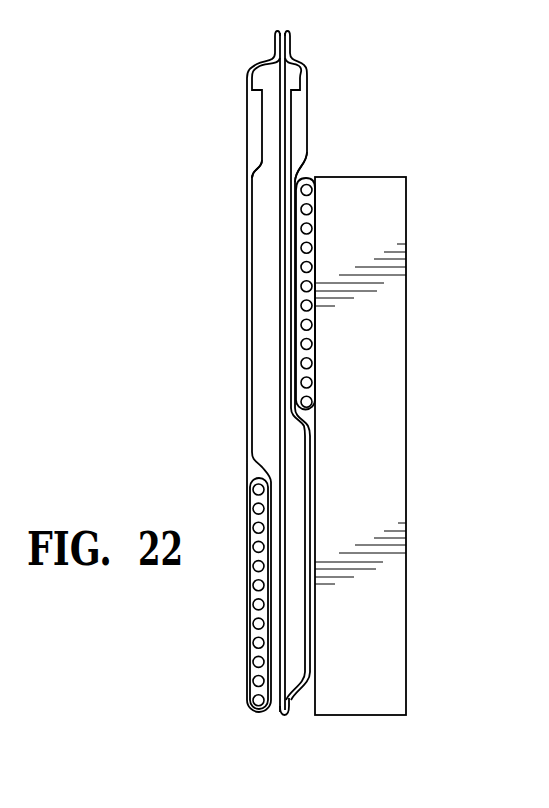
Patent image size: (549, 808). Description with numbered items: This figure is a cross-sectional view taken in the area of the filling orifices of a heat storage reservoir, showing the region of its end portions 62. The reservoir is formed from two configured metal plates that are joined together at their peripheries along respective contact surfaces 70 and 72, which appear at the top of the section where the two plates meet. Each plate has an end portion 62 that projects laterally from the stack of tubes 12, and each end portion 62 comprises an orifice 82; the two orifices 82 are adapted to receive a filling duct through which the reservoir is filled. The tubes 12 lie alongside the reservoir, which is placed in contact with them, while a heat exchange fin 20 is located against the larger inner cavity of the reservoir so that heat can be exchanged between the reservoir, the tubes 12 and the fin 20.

The tube 12 is at (320, 238).
The heat exchange fin 20 is at (375, 654).
The end portion 62 is at (251, 70).
The contact surface 70 is at (276, 33).
The contact surface 72 is at (287, 33).
The orifice 82 is at (257, 163).